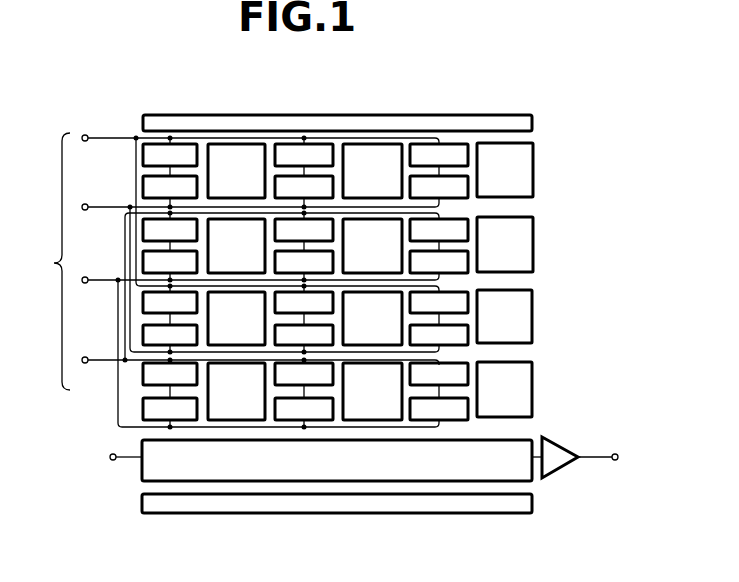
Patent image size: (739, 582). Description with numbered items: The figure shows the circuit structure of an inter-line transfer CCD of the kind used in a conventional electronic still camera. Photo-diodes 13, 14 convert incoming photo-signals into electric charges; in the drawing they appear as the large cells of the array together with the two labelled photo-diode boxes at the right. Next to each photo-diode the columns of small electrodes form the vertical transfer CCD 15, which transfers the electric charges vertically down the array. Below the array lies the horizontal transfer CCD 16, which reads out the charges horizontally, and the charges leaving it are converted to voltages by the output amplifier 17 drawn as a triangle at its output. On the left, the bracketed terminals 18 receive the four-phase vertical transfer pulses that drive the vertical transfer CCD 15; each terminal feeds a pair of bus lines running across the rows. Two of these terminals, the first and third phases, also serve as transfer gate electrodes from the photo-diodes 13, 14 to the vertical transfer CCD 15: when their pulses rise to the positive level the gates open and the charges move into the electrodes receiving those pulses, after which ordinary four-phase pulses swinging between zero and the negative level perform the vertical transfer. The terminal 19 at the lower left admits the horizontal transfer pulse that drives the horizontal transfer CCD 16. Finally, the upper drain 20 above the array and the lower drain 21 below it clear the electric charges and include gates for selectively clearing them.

The photo-diode 13 is at (374, 331).
The photo-diode 14 is at (374, 405).
The vertical transfer CCD 15 is at (450, 143).
The horizontal transfer CCD 16 is at (525, 437).
The output amplifier 17 is at (565, 469).
The terminals 18 is at (55, 263).
The terminal 19 is at (110, 459).
The upper drain 20 is at (293, 118).
The lower drain 21 is at (497, 514).